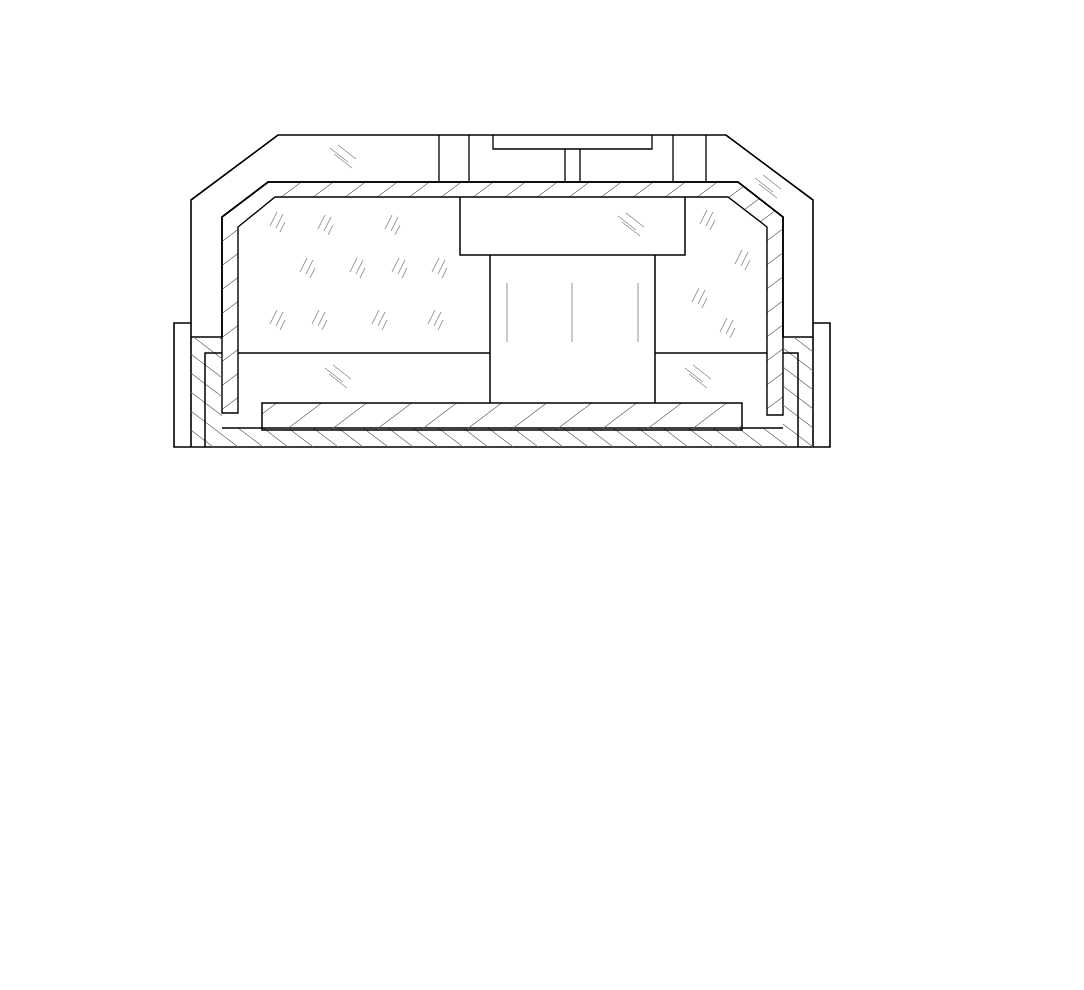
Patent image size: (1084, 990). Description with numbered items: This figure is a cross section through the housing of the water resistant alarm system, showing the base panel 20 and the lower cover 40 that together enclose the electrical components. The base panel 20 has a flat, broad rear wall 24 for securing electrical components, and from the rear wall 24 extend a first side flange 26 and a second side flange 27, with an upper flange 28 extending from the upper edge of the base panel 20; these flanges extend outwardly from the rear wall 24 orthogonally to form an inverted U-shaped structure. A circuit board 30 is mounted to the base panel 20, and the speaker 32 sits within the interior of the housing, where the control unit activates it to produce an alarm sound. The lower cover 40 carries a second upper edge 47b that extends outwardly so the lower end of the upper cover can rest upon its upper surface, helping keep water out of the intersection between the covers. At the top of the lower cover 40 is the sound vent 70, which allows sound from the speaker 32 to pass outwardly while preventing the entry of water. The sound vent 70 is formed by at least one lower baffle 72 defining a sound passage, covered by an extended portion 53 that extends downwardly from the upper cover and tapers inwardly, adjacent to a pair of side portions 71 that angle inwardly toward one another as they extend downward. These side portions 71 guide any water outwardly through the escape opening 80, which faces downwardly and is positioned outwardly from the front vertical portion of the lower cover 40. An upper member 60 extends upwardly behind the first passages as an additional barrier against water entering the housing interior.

The base panel 20 is at (287, 458).
The rear wall 24 is at (487, 440).
The first side flange 26 is at (215, 397).
The second side flange 27 is at (790, 392).
The upper flange 28 is at (282, 352).
The circuit board 30 is at (375, 412).
The speaker 32 is at (595, 376).
The lower cover 40 is at (800, 272).
The second upper edge 47b is at (282, 162).
The extended portion 53 is at (568, 145).
The upper member 60 is at (686, 215).
The sound vent 70 is at (502, 136).
The side portions 71 is at (460, 155).
The lower baffle 72 is at (523, 167).
The escape opening 80 is at (572, 170).